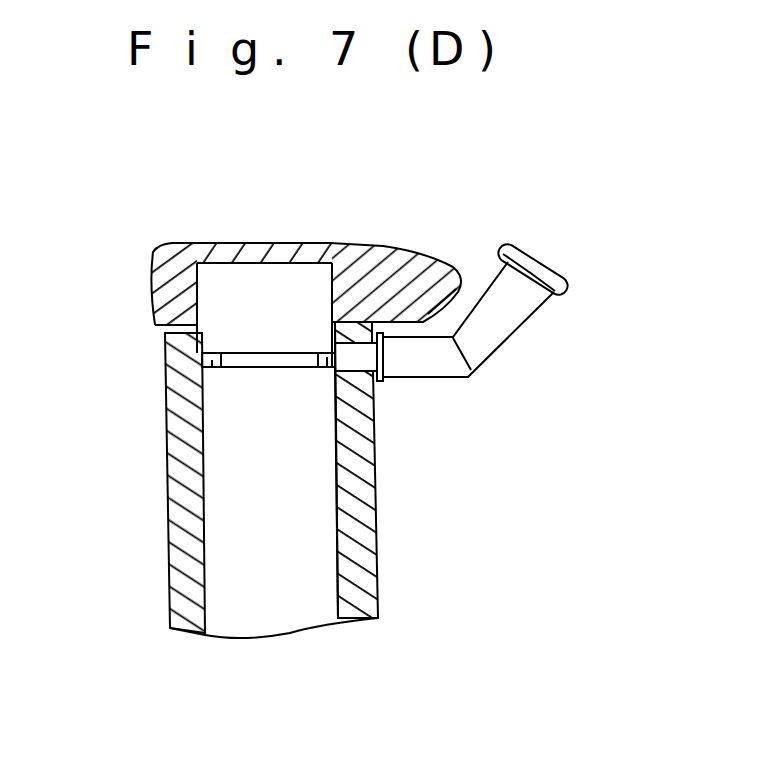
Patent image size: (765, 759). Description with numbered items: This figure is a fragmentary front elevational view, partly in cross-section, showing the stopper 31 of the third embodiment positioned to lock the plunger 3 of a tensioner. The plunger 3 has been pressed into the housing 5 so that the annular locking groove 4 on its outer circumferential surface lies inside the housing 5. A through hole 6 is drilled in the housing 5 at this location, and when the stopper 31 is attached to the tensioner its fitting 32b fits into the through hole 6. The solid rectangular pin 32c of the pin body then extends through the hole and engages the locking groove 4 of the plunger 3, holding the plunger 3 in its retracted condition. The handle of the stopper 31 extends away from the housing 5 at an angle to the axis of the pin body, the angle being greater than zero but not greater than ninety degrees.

The plunger 3 is at (310, 537).
The locking groove 4 is at (212, 360).
The housing 5 is at (176, 522).
The through hole 6 is at (350, 370).
The stopper 31 is at (483, 247).
The fitting 32b is at (353, 347).
The rectangular pin 32c is at (327, 357).